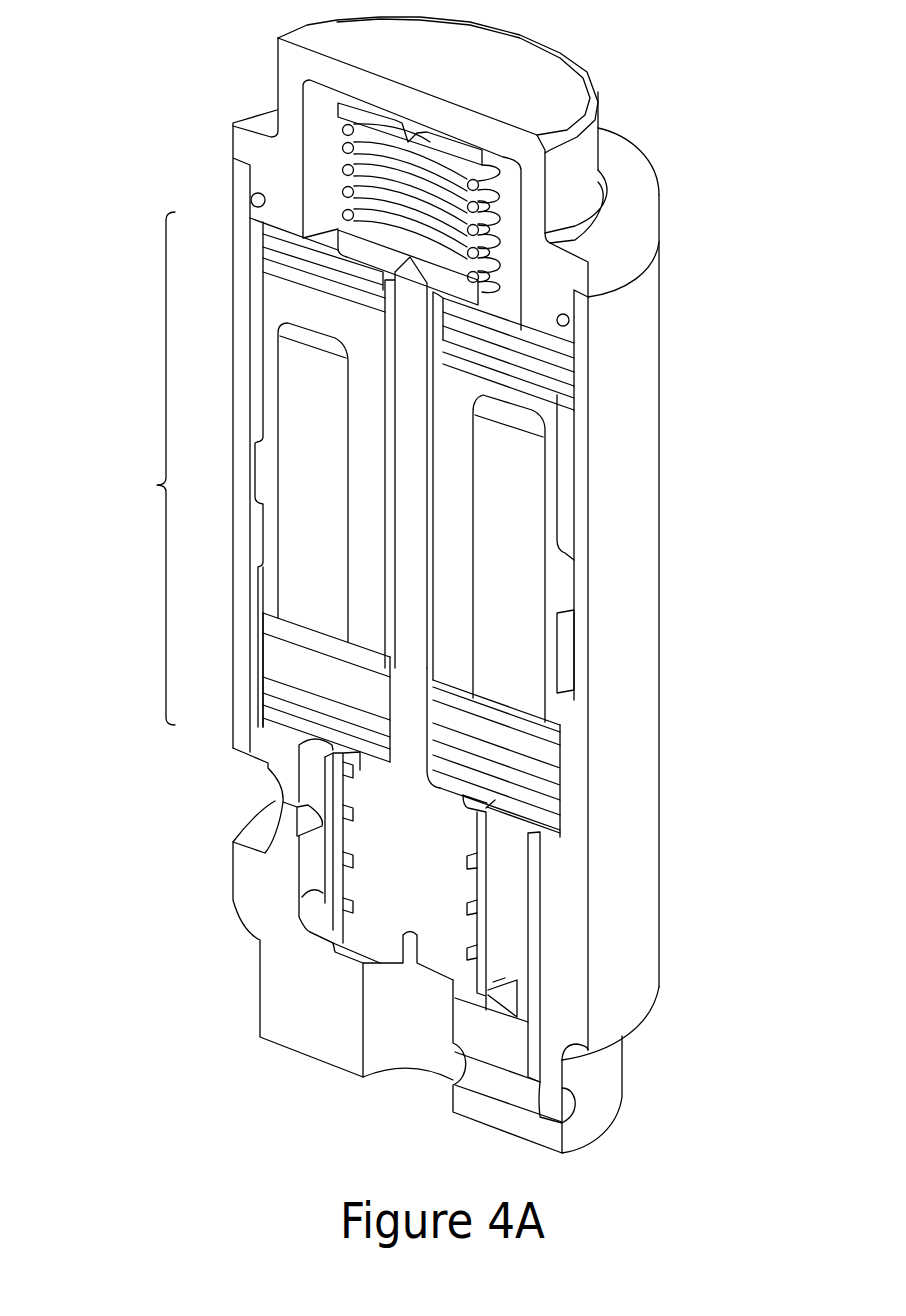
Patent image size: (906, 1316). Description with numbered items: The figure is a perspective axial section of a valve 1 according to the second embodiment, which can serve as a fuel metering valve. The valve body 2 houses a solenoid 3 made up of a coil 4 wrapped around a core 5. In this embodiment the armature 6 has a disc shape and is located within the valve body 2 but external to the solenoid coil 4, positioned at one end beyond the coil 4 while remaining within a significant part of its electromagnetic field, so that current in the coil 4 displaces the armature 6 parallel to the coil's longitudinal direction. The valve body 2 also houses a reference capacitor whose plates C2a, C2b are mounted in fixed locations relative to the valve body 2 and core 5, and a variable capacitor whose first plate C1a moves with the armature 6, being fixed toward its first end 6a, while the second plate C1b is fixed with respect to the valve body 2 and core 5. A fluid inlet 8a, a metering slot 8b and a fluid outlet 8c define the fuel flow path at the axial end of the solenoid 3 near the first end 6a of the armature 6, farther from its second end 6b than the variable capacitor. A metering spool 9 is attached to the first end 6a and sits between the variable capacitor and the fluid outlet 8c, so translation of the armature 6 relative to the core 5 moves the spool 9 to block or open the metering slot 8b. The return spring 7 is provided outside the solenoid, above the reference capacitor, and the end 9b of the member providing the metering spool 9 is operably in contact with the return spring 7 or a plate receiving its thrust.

The valve 1 is at (446, 585).
The valve body 2 is at (633, 204).
The solenoid 3 is at (143, 473).
The coil 4 is at (520, 494).
The core 5 is at (275, 287).
The armature 6 is at (290, 661).
The first end of the armature 6a is at (547, 772).
The second end of the armature 6b is at (558, 733).
The return spring 7 is at (505, 198).
The fluid inlet 8a is at (277, 815).
The metering slot 8b is at (313, 927).
The fluid outlet 8c is at (400, 1043).
The metering spool 9 is at (411, 513).
The end of the metering spool member 9b is at (405, 282).
The first variable capacitor plate C1a is at (555, 788).
The second variable capacitor plate C1b is at (555, 820).
The first reference capacitor plate C2a is at (497, 318).
The second reference capacitor plate C2b is at (510, 350).